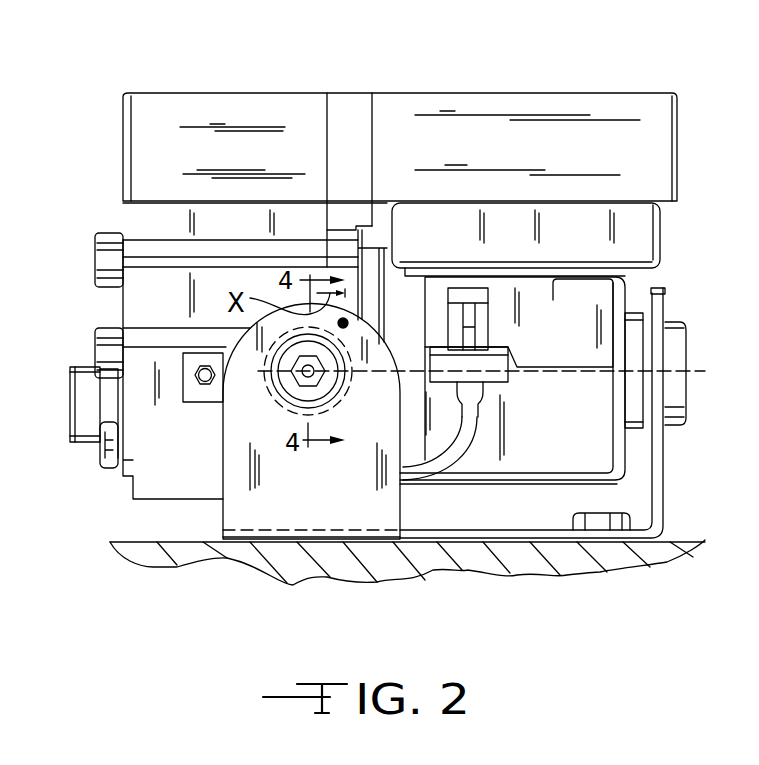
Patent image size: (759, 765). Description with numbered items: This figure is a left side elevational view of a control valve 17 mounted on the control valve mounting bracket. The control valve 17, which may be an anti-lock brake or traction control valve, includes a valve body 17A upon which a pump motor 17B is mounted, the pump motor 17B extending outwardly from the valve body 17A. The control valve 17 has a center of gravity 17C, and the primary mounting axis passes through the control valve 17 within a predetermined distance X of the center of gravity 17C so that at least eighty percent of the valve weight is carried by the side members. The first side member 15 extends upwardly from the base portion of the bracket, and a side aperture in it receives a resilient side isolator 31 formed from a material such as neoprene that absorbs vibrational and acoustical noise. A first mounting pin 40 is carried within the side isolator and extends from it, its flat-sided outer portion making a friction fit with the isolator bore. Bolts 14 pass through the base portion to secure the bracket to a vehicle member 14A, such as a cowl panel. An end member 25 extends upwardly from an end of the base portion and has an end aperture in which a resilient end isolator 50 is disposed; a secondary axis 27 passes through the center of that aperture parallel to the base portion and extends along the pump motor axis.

The control valve 17 is at (241, 78).
The valve body 17A is at (200, 465).
The pump motor 17B is at (583, 442).
The center of gravity 17C is at (348, 321).
The secondary axis 27 is at (523, 362).
The second side isolator 31 is at (330, 383).
The first mounting pin 40 is at (293, 381).
The first side member 15 is at (330, 495).
The bolts 14 is at (575, 515).
The vehicle member 14A is at (573, 560).
The end member 25 is at (663, 479).
The end isolator 50 is at (683, 322).